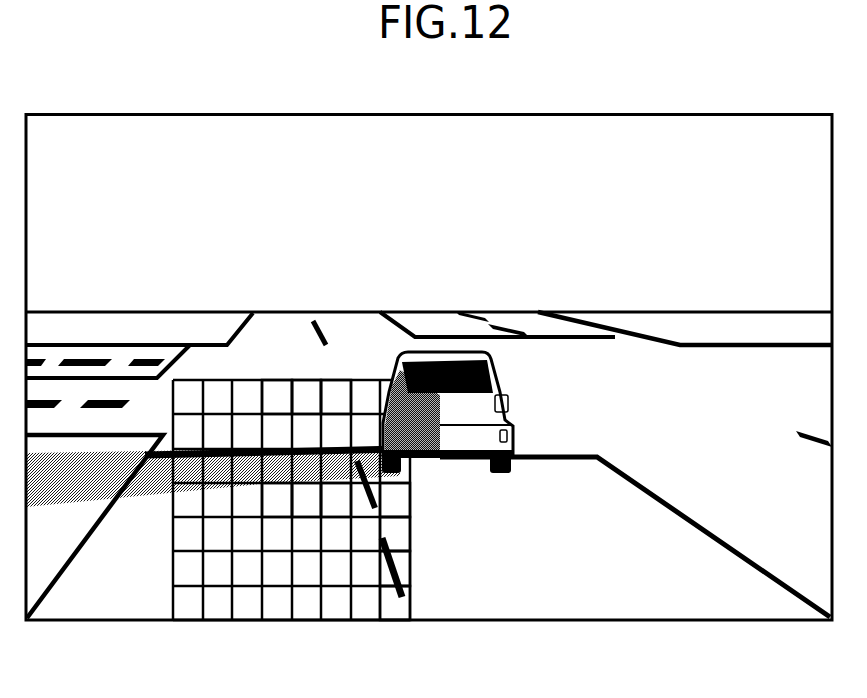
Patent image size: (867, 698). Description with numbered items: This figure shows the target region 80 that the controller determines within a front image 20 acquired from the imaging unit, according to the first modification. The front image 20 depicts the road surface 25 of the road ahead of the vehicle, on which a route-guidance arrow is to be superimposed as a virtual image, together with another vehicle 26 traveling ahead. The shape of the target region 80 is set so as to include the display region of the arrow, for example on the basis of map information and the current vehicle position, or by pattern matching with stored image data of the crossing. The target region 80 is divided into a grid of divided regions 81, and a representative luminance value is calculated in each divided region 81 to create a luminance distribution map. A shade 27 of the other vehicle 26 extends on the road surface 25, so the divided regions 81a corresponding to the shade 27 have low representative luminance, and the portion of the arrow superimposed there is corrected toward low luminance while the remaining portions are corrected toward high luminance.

The front image 20 is at (634, 112).
The road surface 25 is at (250, 578).
The another vehicle 26 is at (505, 377).
The shade 27 is at (362, 440).
The target region 80 is at (248, 377).
The divided regions 81 is at (335, 392).
The divided regions corresponding to the shade 81a is at (342, 472).